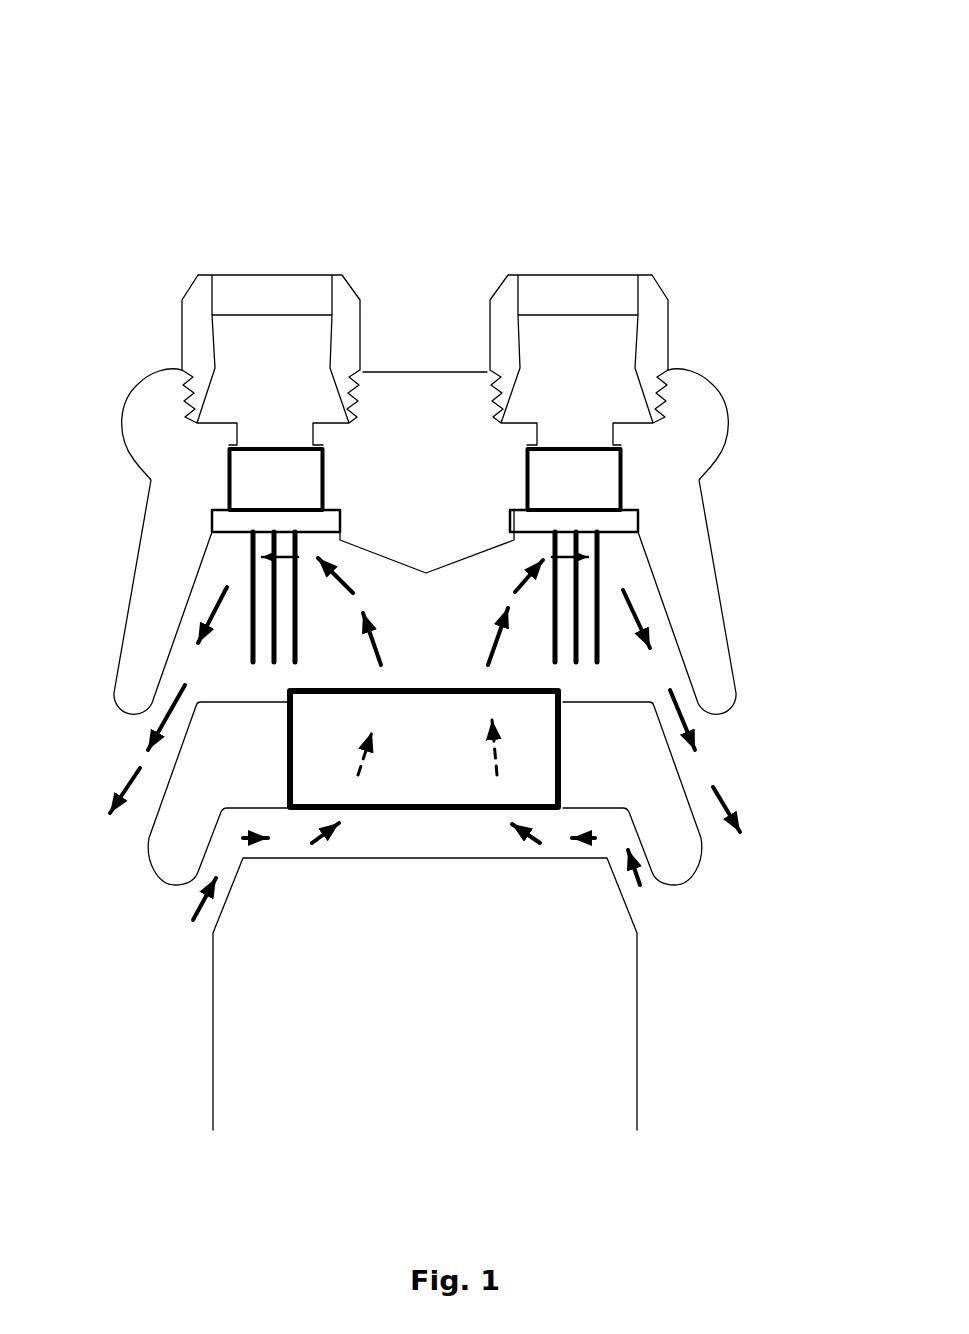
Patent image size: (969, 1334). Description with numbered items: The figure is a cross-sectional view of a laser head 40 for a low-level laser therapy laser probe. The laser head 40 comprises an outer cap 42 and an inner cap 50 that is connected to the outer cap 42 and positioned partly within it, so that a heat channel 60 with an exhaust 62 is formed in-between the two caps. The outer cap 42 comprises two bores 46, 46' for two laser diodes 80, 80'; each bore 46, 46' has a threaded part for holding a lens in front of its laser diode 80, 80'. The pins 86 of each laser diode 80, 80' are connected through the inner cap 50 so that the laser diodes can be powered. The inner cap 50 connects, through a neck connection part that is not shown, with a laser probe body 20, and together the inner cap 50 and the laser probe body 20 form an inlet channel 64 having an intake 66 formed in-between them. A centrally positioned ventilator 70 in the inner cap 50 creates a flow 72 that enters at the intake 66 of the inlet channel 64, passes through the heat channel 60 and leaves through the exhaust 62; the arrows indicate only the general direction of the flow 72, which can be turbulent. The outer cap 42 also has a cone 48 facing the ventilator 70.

The laser head 40 is at (178, 98).
The cone 48 is at (427, 573).
The heat channel 60 is at (448, 627).
The bore 46' is at (192, 360).
The bore 46 is at (636, 380).
The laser diode 80' is at (199, 470).
The laser diode 80 is at (663, 491).
The pins 86 is at (248, 573).
The flow 72 is at (622, 610).
The outer cap 42 is at (710, 662).
The exhaust 62 is at (717, 730).
The ventilator 70 is at (428, 763).
The inlet channel 64 is at (405, 832).
The laser probe body 20 is at (430, 1008).
The intake 66 is at (186, 927).
The inner cap 50 is at (688, 871).